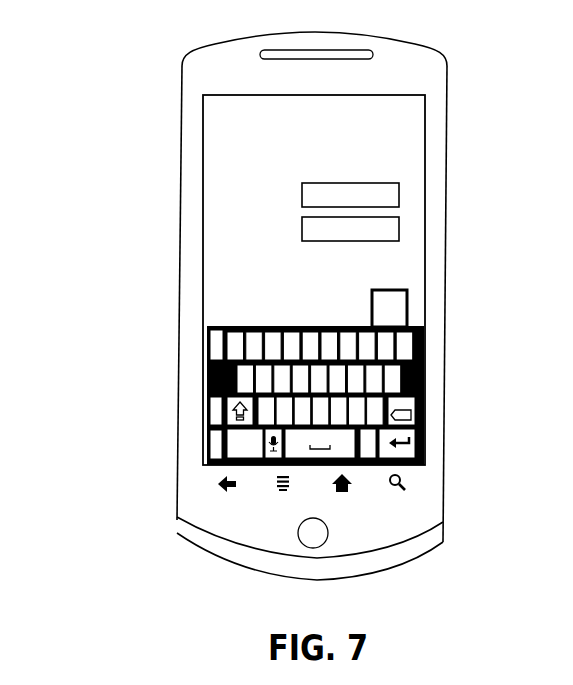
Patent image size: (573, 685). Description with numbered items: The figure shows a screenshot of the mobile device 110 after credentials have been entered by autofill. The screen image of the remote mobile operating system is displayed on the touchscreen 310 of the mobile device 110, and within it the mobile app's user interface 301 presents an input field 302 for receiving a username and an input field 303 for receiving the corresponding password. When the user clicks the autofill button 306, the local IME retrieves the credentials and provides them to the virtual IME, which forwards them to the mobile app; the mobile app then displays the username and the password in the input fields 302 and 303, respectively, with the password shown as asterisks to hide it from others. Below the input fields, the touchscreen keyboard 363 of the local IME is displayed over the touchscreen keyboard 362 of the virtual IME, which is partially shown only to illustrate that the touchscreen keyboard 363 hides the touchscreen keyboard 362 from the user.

The mobile device 110 is at (84, 214).
The touchscreen 310 is at (203, 141).
The user interface 301 is at (408, 132).
The input field 302 is at (385, 183).
The input field 303 is at (312, 241).
The autofill button 306 is at (395, 298).
The touchscreen keyboard 362 is at (205, 331).
The touchscreen keyboard 363 is at (224, 398).